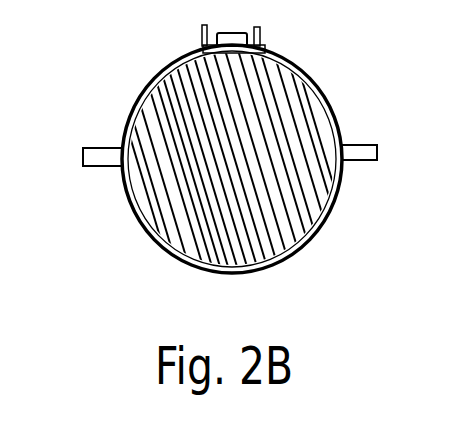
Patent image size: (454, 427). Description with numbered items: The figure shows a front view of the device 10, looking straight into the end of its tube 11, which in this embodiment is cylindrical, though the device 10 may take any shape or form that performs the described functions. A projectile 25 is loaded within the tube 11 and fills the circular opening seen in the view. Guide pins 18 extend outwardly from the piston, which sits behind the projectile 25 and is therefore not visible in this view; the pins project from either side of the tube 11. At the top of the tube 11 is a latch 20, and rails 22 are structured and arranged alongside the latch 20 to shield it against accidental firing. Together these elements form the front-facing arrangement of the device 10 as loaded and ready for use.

The device 10 is at (242, 158).
The tube 11 is at (324, 224).
The guide pins 18 is at (92, 147).
The latch 20 is at (227, 32).
The rails 22 is at (263, 36).
The projectile 25 is at (191, 230).